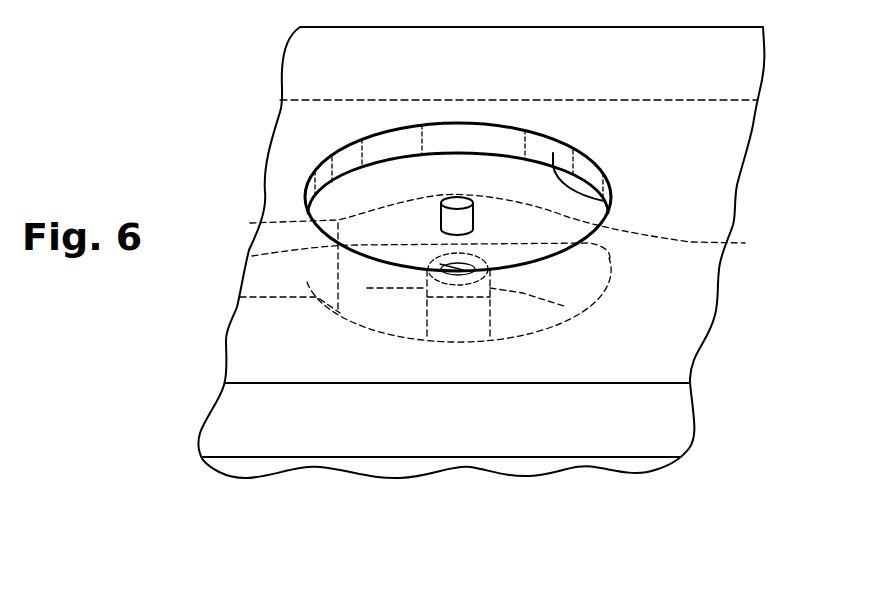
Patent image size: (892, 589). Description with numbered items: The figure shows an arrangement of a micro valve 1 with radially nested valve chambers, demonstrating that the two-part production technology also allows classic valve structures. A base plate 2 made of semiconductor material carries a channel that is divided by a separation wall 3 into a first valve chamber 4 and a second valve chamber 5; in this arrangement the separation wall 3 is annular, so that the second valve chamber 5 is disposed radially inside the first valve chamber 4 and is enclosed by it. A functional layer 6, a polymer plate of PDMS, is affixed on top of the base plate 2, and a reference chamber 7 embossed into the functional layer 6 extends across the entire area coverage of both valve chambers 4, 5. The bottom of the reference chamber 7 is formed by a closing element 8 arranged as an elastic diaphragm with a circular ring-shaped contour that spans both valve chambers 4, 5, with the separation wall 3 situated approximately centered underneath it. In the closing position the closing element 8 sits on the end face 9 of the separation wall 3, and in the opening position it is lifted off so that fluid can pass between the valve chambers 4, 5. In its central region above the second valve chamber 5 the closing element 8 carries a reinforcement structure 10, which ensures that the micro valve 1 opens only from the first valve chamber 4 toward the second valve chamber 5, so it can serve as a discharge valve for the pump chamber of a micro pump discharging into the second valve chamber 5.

The micro valve 1 is at (200, 92).
The base plate 2 is at (518, 463).
The separation wall 3 is at (450, 318).
The first valve chamber 4 is at (530, 313).
The second valve chamber 5 is at (252, 256).
The functional layer 6 is at (692, 140).
The reference chamber 7 is at (606, 205).
The closing element 8 is at (392, 222).
The end face 9 is at (504, 268).
The reinforcement structure 10 is at (445, 198).